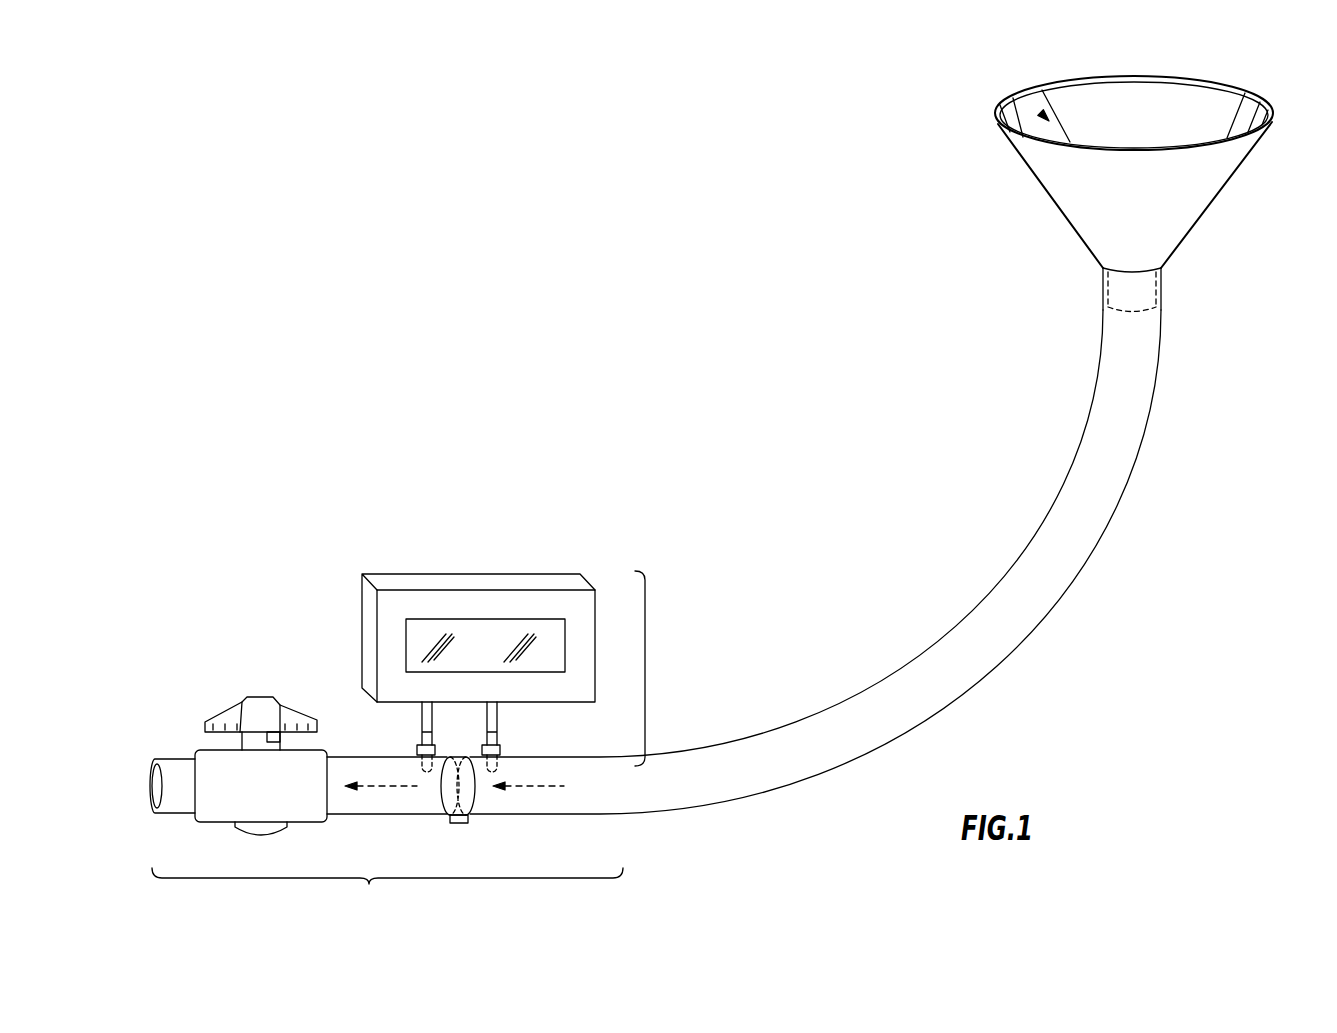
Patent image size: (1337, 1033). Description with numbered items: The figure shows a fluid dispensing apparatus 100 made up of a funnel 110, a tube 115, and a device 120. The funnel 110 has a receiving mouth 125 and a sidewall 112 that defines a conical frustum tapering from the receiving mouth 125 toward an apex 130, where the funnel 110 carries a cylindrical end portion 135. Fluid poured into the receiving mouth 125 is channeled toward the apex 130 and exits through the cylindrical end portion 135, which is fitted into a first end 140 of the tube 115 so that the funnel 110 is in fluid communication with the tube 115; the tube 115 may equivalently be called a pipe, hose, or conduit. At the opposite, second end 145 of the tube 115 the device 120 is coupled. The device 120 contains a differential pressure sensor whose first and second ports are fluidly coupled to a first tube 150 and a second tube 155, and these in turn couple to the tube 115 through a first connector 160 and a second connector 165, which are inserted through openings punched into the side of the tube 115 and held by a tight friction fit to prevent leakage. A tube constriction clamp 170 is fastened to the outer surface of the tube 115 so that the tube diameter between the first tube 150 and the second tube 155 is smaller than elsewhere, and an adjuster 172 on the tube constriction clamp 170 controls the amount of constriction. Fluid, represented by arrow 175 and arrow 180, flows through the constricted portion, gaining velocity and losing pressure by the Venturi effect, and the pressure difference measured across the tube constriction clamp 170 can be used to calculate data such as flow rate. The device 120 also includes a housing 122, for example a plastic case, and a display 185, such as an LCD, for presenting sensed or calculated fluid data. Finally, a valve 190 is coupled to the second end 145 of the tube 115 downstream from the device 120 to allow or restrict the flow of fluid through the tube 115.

The fluid dispensing apparatus 100 is at (560, 366).
The funnel 110 is at (1272, 113).
The sidewall 112 is at (1045, 95).
The receiving mouth 125 is at (1045, 117).
The apex 130 is at (1176, 267).
The cylindrical end portion 135 is at (1147, 287).
The first end 140 is at (1092, 277).
The tube 115 is at (1075, 565).
The device 120 is at (645, 662).
The housing 122 is at (513, 574).
The display 185 is at (420, 617).
The first tube 150 is at (420, 711).
The second tube 155 is at (499, 712).
The first connector 160 is at (417, 753).
The second connector 165 is at (501, 753).
The tube constriction clamp 170 is at (457, 757).
The adjuster 172 is at (462, 824).
The arrow 175 is at (548, 786).
The arrow 180 is at (392, 786).
The second end 145 is at (370, 884).
The valve 190 is at (226, 823).